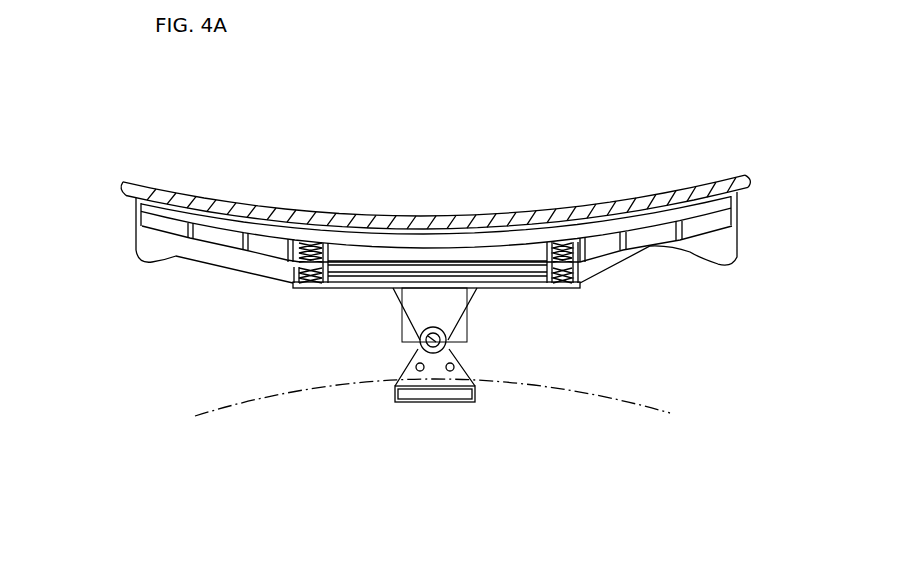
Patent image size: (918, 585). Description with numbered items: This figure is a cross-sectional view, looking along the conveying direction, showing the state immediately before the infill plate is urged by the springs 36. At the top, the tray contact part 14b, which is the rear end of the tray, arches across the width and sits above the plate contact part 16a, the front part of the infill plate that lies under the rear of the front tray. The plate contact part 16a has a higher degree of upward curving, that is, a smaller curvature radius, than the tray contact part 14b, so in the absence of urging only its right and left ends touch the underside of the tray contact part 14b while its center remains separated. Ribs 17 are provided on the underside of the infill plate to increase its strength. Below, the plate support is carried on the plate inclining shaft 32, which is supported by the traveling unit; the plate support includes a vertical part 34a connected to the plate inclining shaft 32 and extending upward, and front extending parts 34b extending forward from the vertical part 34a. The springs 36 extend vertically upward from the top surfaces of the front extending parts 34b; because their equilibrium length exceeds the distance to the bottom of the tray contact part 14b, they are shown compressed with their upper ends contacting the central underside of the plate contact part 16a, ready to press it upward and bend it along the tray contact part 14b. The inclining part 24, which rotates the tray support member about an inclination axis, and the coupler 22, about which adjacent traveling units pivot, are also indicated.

The tray contact part 14b is at (148, 186).
The plate contact part 16a is at (133, 211).
The ribs 17 is at (628, 238).
The coupler 22 is at (251, 393).
The inclining part 24 is at (476, 347).
The plate inclining shaft 32 is at (421, 339).
The vertical part 34a is at (457, 297).
The front extending parts 34b is at (561, 288).
The springs 36 is at (588, 274).